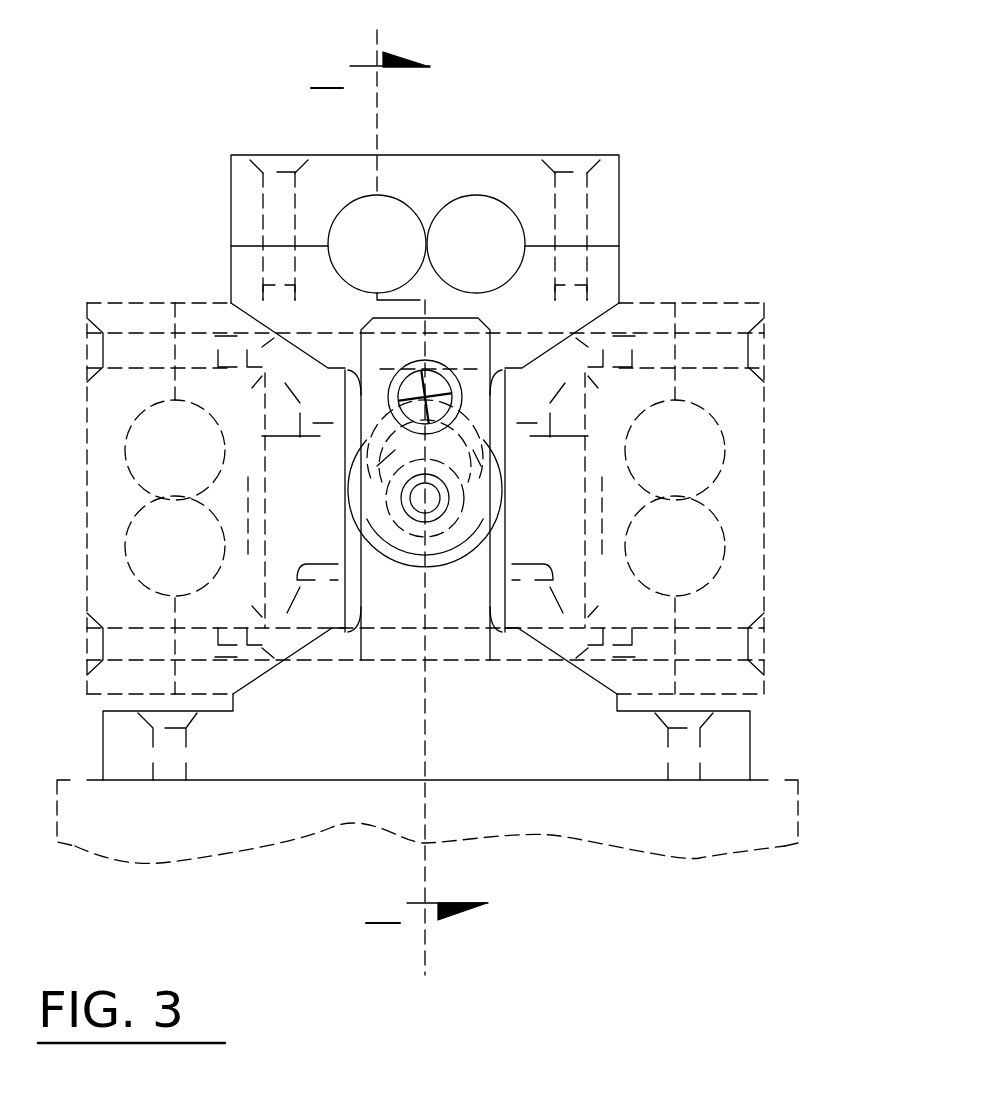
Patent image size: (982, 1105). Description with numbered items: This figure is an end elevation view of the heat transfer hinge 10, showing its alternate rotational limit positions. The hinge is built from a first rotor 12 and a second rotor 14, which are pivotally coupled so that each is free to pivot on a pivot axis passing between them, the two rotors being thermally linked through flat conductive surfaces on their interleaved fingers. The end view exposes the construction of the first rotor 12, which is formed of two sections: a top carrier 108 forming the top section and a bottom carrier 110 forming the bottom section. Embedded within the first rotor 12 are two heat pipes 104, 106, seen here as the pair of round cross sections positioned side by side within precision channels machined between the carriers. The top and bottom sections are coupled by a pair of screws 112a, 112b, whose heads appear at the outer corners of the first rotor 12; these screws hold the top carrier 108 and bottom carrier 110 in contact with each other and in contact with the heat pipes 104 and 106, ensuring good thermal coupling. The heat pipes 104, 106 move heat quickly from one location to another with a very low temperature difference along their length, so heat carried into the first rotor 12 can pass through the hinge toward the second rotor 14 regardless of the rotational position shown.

The heat transfer hinge 10 is at (585, 55).
The first rotor 12 is at (423, 235).
The second rotor 14 is at (580, 749).
The first rotor heat pipe 104 is at (338, 268).
The first rotor heat pipe 106 is at (517, 274).
The top carrier 108 is at (231, 207).
The bottom carrier 110 is at (231, 275).
The screw 112a is at (260, 153).
The screw 112b is at (553, 153).